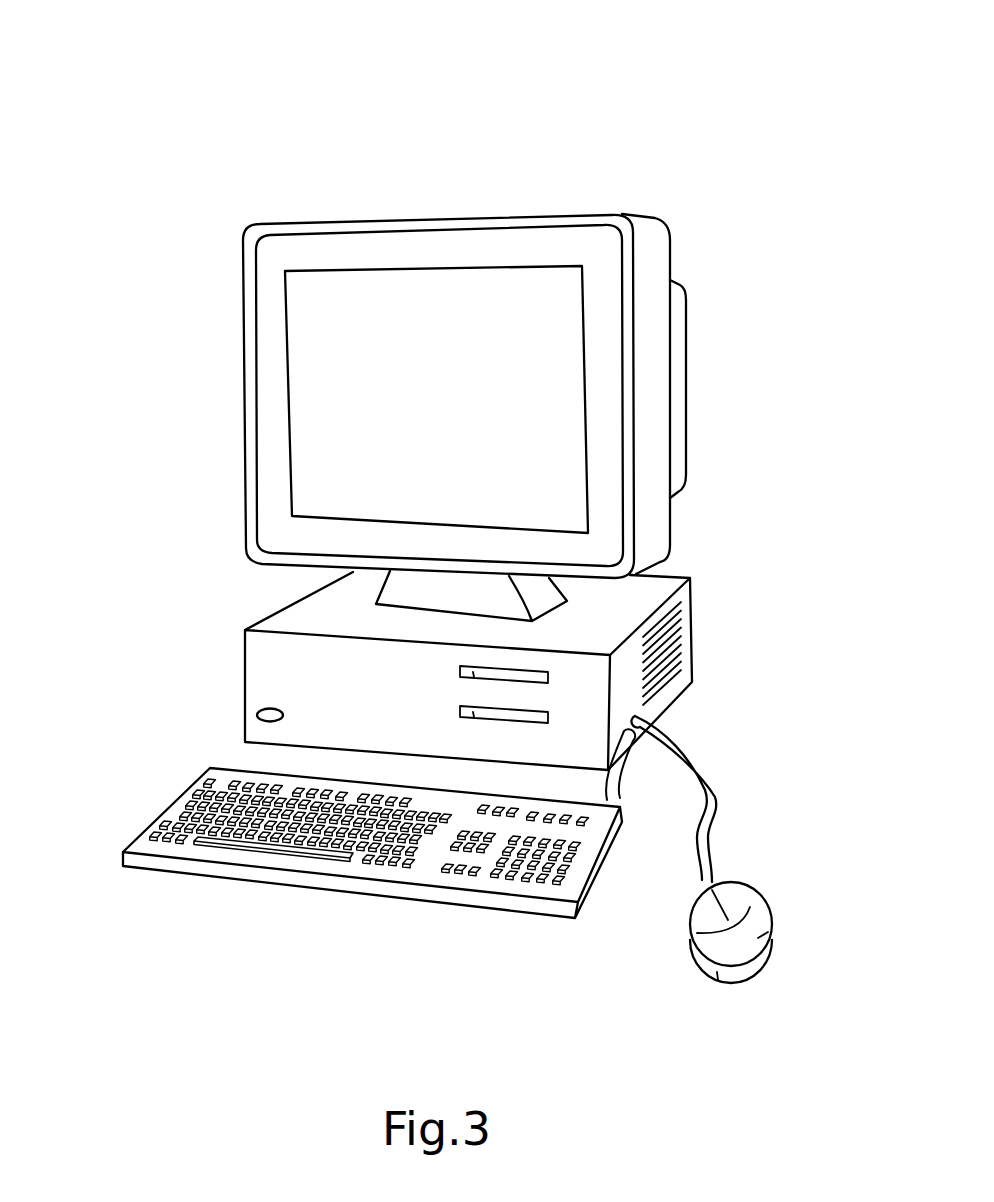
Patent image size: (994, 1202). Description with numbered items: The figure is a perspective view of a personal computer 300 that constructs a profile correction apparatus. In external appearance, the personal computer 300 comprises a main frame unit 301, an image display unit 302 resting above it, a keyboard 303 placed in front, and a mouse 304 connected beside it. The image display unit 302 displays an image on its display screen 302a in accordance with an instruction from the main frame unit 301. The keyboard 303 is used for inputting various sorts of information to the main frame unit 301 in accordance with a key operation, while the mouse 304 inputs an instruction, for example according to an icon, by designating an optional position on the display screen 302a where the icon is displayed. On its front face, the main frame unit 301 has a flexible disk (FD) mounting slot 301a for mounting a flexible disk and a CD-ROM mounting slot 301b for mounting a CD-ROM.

The personal computer 300 is at (560, 92).
The main frame unit 301 is at (663, 588).
The flexible disk (FD) mounting slot 301a is at (475, 674).
The CD-ROM mounting slot 301b is at (475, 714).
The image display unit 302 is at (307, 245).
The display screen 302a is at (330, 343).
The keyboard 303 is at (390, 890).
The mouse 304 is at (767, 930).